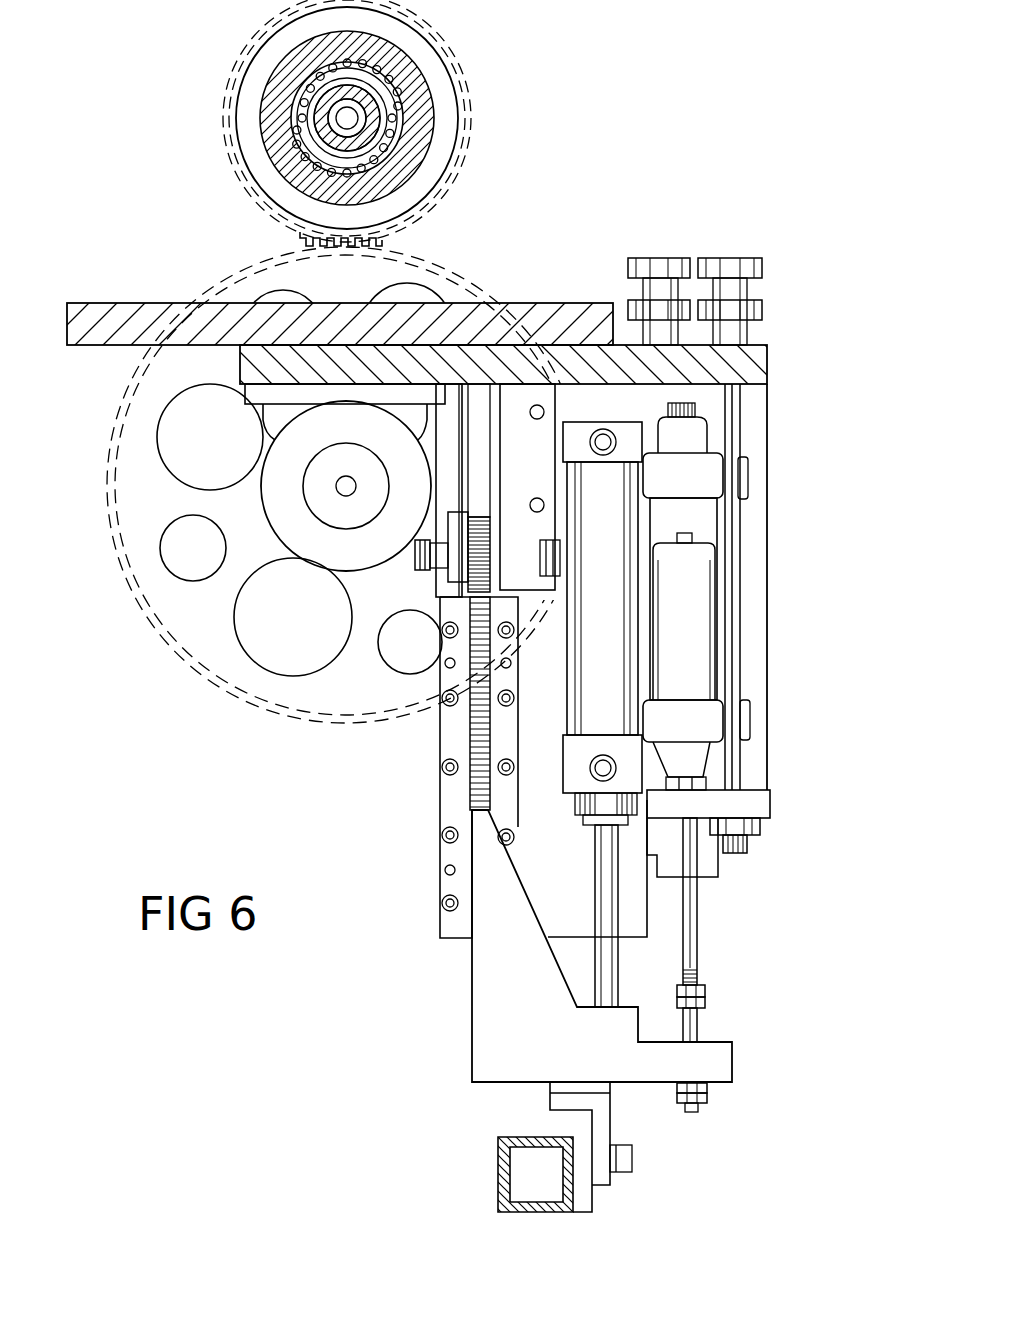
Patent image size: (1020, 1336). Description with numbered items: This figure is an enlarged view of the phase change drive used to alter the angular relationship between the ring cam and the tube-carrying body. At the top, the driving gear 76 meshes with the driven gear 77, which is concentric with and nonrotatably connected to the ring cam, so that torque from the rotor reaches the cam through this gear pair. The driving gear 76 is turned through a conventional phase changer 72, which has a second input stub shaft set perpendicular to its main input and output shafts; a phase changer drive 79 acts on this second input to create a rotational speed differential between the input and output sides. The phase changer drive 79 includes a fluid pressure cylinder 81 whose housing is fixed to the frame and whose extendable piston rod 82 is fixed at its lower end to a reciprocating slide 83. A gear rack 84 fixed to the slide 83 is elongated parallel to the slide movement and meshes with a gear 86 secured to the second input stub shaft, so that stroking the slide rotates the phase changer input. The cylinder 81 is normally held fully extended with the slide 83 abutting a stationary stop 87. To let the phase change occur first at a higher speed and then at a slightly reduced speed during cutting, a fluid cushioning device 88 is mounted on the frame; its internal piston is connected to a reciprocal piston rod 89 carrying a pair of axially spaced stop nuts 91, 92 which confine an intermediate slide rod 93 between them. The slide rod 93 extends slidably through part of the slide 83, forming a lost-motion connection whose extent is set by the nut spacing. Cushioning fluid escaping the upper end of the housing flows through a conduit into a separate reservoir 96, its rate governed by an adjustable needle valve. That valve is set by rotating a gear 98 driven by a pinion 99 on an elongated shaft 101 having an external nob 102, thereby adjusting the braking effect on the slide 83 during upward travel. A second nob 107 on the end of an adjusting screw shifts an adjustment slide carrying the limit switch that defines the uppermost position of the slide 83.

The driven gear 77 is at (440, 146).
The driving gear 76 is at (133, 445).
The phase changer 72 is at (275, 488).
The gear 86 is at (478, 548).
The phase changer drive 79 is at (440, 556).
The gear rack 84 is at (465, 738).
The reciprocating slide 83 is at (492, 1052).
The fluid pressure cylinder 81 is at (583, 668).
The piston rod 82 is at (598, 877).
The fluid cushioning device 88 is at (712, 604).
The reservoir 96 is at (708, 676).
The elongated shaft 101 is at (738, 405).
The nob 107 is at (658, 284).
The external nob 102 is at (724, 287).
The gear 98 is at (760, 829).
The pinion 99 is at (748, 848).
The piston rod 89 is at (690, 899).
The stop nut 91 is at (700, 995).
The intermediate slide rod 93 is at (692, 1027).
The stop nut 92 is at (707, 1100).
The stationary stop 87 is at (552, 1106).